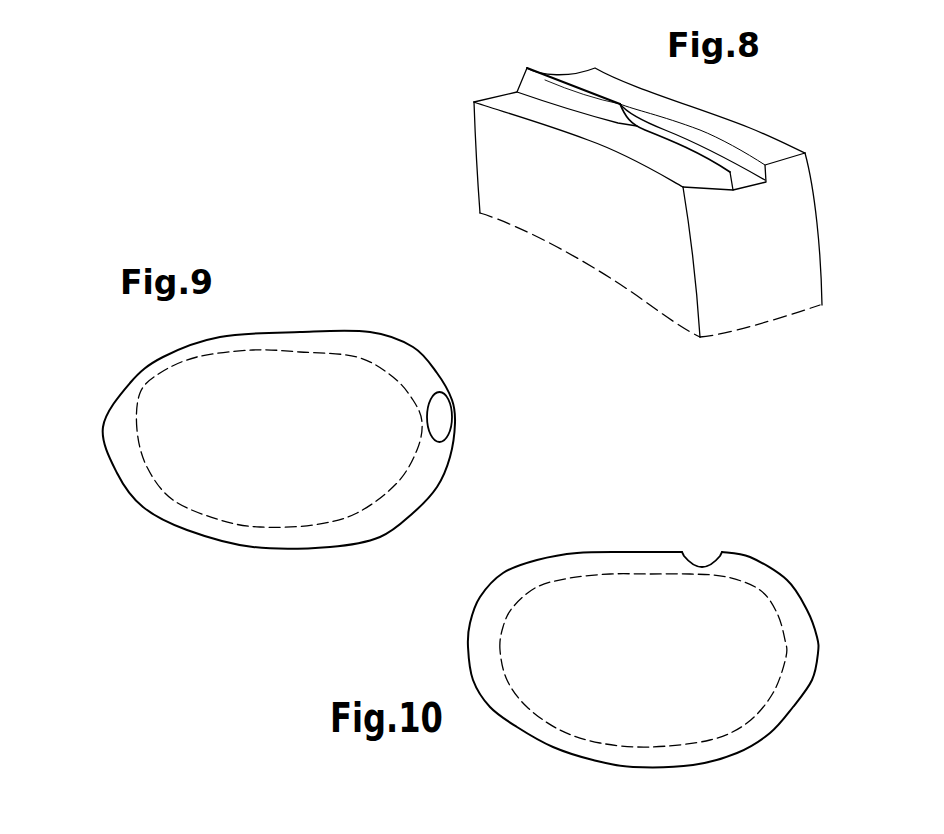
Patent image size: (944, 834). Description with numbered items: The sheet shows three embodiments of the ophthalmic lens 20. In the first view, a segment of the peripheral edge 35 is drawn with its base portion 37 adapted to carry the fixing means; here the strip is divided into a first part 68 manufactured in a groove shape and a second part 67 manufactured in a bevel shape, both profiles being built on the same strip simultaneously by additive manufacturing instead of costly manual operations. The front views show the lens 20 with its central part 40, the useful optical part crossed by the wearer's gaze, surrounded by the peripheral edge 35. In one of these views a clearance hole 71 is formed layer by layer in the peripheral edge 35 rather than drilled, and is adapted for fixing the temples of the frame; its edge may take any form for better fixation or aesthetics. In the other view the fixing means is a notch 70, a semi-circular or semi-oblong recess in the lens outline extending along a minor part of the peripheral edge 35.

In FIG. 8, the ophthalmic lens 20 is at (641, 169).
In FIG. 9, the ophthalmic lens 20 is at (282, 440).
In FIG. 10, the ophthalmic lens 20 is at (680, 627).
In FIG. 9, the peripheral edge 35 is at (130, 470).
In FIG. 10, the peripheral edge 35 is at (800, 632).
In FIG. 8, the base portion 37 is at (773, 150).
In FIG. 8, the central part 40 is at (802, 240).
In FIG. 9, the central part 40 is at (163, 410).
In FIG. 10, the central part 40 is at (755, 674).
In FIG. 8, the second part 67 is at (543, 87).
In FIG. 8, the first part 68 is at (743, 182).
In FIG. 10, the notch 70 is at (702, 549).
In FIG. 9, the clearance hole 71 is at (440, 417).